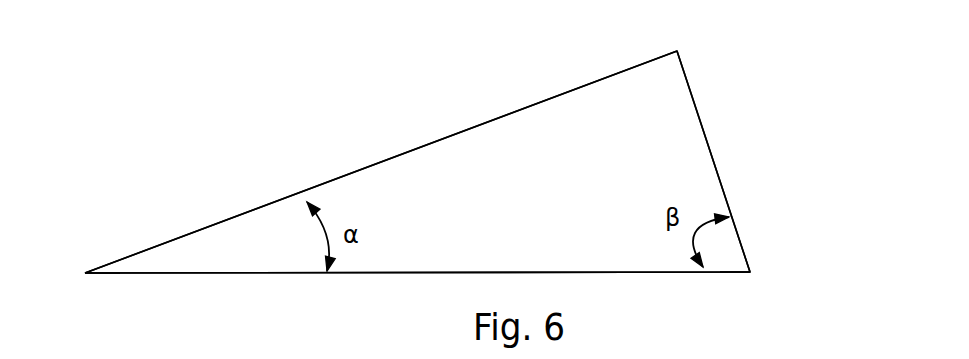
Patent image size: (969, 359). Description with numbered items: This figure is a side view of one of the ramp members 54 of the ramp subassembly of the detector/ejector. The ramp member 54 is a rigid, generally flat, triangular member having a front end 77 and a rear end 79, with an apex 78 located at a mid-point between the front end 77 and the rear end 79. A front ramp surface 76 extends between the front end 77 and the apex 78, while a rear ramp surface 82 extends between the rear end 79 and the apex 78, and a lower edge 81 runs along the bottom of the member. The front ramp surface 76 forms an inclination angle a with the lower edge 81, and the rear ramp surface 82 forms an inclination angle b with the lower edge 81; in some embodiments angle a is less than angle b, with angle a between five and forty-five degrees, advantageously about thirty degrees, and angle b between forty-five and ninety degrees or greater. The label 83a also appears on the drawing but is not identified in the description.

The ramp member 54 is at (490, 78).
The front ramp surface 76 is at (347, 183).
The front end 77 is at (88, 273).
The apex 78 is at (677, 51).
The rear end 79 is at (750, 272).
The lower edge 81 is at (367, 272).
The rear ramp surface 82 is at (721, 179).
The leg portion 83a is at (639, 335).